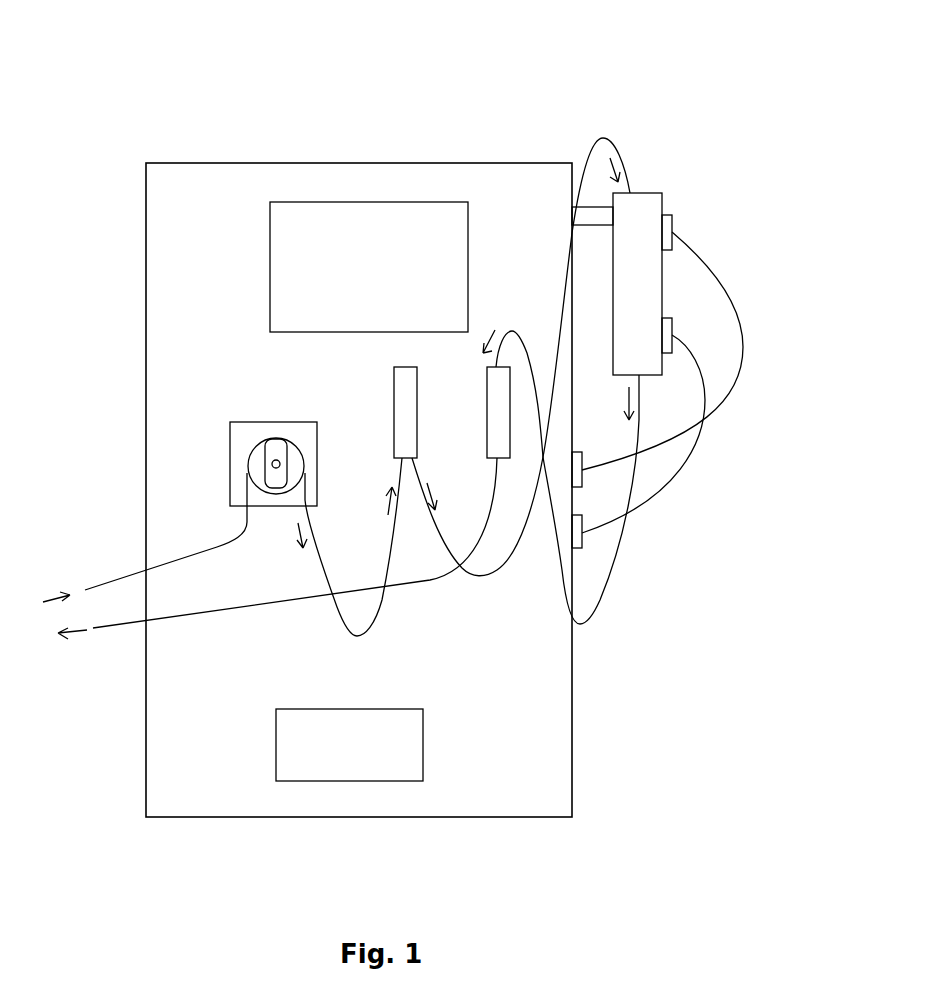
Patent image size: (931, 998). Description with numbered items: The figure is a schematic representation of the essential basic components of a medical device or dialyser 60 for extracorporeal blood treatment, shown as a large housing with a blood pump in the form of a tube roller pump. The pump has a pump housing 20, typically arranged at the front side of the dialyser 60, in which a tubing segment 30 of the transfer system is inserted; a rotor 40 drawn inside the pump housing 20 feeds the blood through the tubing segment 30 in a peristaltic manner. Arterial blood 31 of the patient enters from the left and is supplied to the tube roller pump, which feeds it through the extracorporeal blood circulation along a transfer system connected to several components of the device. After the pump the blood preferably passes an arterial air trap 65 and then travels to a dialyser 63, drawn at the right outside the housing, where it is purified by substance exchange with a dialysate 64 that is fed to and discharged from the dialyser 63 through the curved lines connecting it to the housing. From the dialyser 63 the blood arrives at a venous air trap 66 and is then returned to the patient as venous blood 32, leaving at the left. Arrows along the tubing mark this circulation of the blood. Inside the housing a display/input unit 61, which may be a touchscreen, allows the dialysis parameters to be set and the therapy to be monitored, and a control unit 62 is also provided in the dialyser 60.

The pump housing 20 is at (250, 428).
The tubing segment 30 is at (247, 495).
The rotor 40 is at (268, 440).
The arterial blood 31 is at (53, 590).
The venous blood 32 is at (78, 643).
The dialyser 60 is at (262, 96).
The display/input unit 61 is at (285, 237).
The control unit 62 is at (418, 743).
The dialyser 63 is at (648, 200).
The dialysate 64 is at (745, 347).
The arterial air trap 65 is at (400, 400).
The venous air trap 66 is at (497, 428).